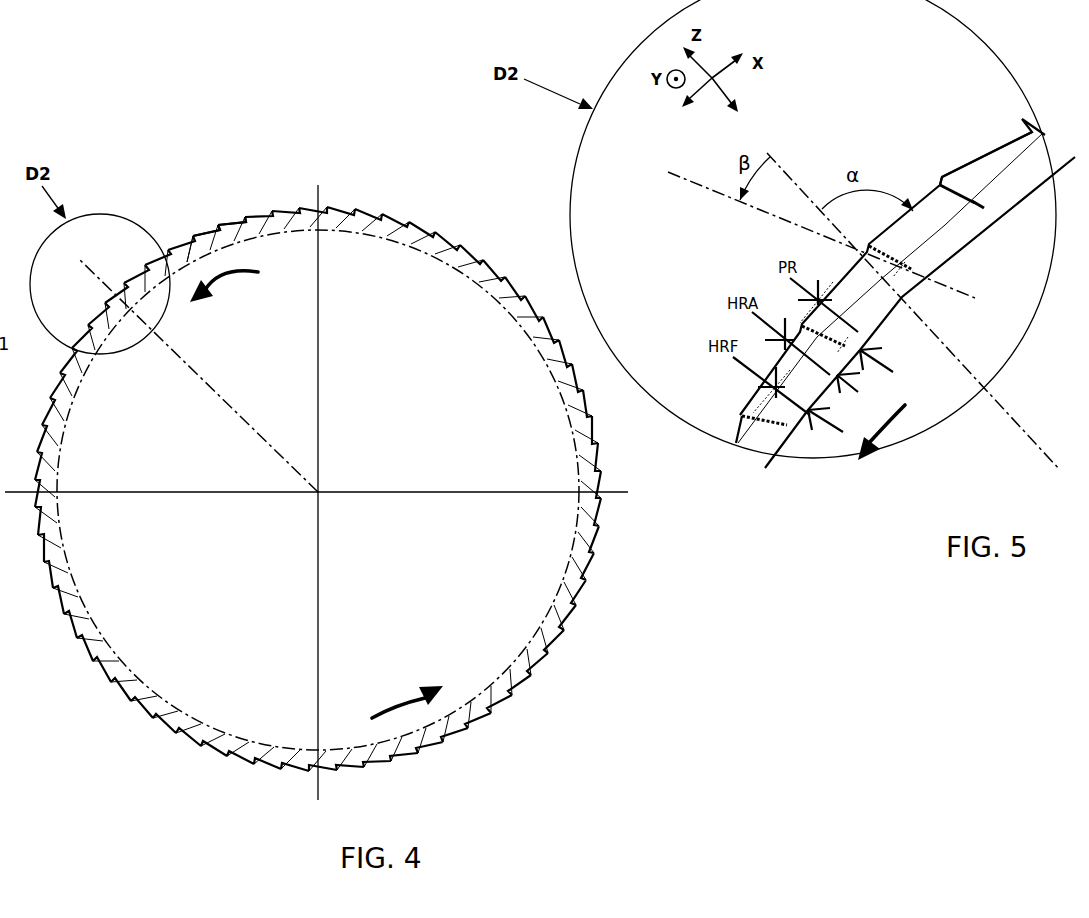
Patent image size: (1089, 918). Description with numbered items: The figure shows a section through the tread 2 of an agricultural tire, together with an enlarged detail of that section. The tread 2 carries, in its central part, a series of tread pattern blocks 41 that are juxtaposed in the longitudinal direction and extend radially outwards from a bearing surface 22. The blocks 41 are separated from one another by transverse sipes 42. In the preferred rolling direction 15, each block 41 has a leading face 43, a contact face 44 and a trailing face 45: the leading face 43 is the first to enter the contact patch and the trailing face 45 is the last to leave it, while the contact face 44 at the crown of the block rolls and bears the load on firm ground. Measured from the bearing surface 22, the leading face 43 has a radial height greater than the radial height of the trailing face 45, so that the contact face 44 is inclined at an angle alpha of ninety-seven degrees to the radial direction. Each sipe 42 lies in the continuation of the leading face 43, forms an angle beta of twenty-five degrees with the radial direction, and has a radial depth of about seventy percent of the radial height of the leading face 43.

In FIG. 4, the tread 2 is at (428, 197).
In FIG. 4, the rolling direction 15 is at (244, 300).
In FIG. 5, the rolling direction 15 is at (898, 432).
In FIG. 5, the bearing surface 22 is at (990, 218).
In FIG. 4, the tread pattern blocks 41 is at (195, 243).
In FIG. 5, the tread pattern blocks 41 is at (990, 172).
In FIG. 4, the transverse sipes 42 is at (218, 228).
In FIG. 5, the transverse sipes 42 is at (968, 188).
In FIG. 5, the leading face 43 is at (920, 190).
In FIG. 5, the contact face 44 is at (990, 140).
In FIG. 5, the trailing face 45 is at (980, 192).